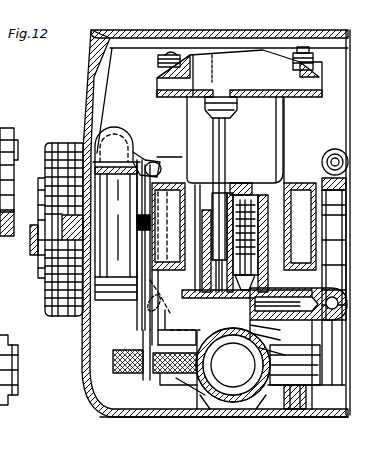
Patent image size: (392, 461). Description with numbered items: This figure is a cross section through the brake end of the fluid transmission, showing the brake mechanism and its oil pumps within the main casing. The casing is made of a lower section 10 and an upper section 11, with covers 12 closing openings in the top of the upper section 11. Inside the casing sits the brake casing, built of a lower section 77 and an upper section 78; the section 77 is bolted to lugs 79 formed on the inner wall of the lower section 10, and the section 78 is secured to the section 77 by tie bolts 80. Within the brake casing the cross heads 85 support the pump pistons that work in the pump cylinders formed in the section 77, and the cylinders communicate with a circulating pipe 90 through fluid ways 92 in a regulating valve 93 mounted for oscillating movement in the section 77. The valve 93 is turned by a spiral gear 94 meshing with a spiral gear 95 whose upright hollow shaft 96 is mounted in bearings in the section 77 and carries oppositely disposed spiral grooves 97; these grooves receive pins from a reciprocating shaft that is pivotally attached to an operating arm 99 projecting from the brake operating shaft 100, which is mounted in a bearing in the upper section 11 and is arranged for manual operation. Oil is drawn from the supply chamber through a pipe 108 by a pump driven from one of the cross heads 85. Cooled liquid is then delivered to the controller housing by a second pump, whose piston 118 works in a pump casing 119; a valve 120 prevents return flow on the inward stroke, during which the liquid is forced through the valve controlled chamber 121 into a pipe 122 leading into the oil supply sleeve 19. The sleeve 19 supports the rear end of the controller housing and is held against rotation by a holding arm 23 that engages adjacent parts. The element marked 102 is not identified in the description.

The cover 12 is at (172, 31).
The upper section of transmission casing 11 is at (86, 66).
The brake casing section 78 is at (158, 86).
The cross head 85 is at (264, 106).
The tie bolt 80 is at (310, 60).
The brake operating shaft 100 is at (23, 138).
The operating arm 99 is at (154, 162).
The pipe 122 is at (324, 154).
The piston 118 is at (225, 195).
The oil supply sleeve 19 is at (334, 287).
The valve controlled chamber 121 is at (265, 258).
The valve 120 is at (303, 302).
The pump casing 119 is at (283, 322).
The hollow shaft 96 is at (167, 303).
The spiral groove 97 is at (42, 229).
The pipe 108 is at (23, 244).
The circulating pipe 90 is at (18, 388).
The spiral gear 95 is at (132, 380).
The brake casing section 77 is at (176, 378).
The housing bottom wall 102 is at (132, 418).
The lower section of transmission casing 10 is at (191, 385).
The regulating valve 93 is at (226, 402).
The spiral gear 94 is at (252, 398).
The fluid way 92 is at (262, 410).
The lug 79 is at (298, 412).
The holding arm 23 is at (306, 364).